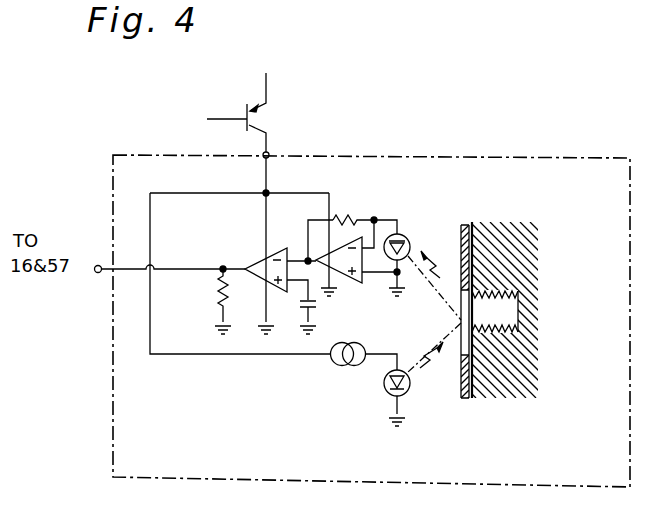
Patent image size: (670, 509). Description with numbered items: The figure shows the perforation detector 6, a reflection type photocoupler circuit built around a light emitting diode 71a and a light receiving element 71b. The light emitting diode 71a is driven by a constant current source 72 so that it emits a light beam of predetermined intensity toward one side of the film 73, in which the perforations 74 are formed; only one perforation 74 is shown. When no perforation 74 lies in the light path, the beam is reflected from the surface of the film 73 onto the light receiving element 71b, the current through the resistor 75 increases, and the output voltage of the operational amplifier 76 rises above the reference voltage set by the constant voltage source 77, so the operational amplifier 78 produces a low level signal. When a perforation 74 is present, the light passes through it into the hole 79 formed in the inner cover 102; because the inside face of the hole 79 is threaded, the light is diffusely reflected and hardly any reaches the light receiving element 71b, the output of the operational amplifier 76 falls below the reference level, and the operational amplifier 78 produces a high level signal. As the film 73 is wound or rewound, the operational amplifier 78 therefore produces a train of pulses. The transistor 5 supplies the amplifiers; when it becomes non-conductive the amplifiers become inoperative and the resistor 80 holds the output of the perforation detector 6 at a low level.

The transistor 5 is at (262, 108).
The perforation detector 6 is at (458, 157).
The light emitting diode 71a is at (407, 392).
The light receiving element 71b is at (404, 236).
The constant current source 72 is at (341, 366).
The film 73 is at (466, 227).
The perforation 74 is at (461, 350).
The resistor 75 is at (340, 218).
The operational amplifier 76 is at (353, 283).
The constant voltage source 77 is at (318, 310).
The operational amplifier 78 is at (258, 266).
The hole 79 is at (508, 310).
The resistor 80 is at (219, 296).
The inner cover 102 is at (507, 366).